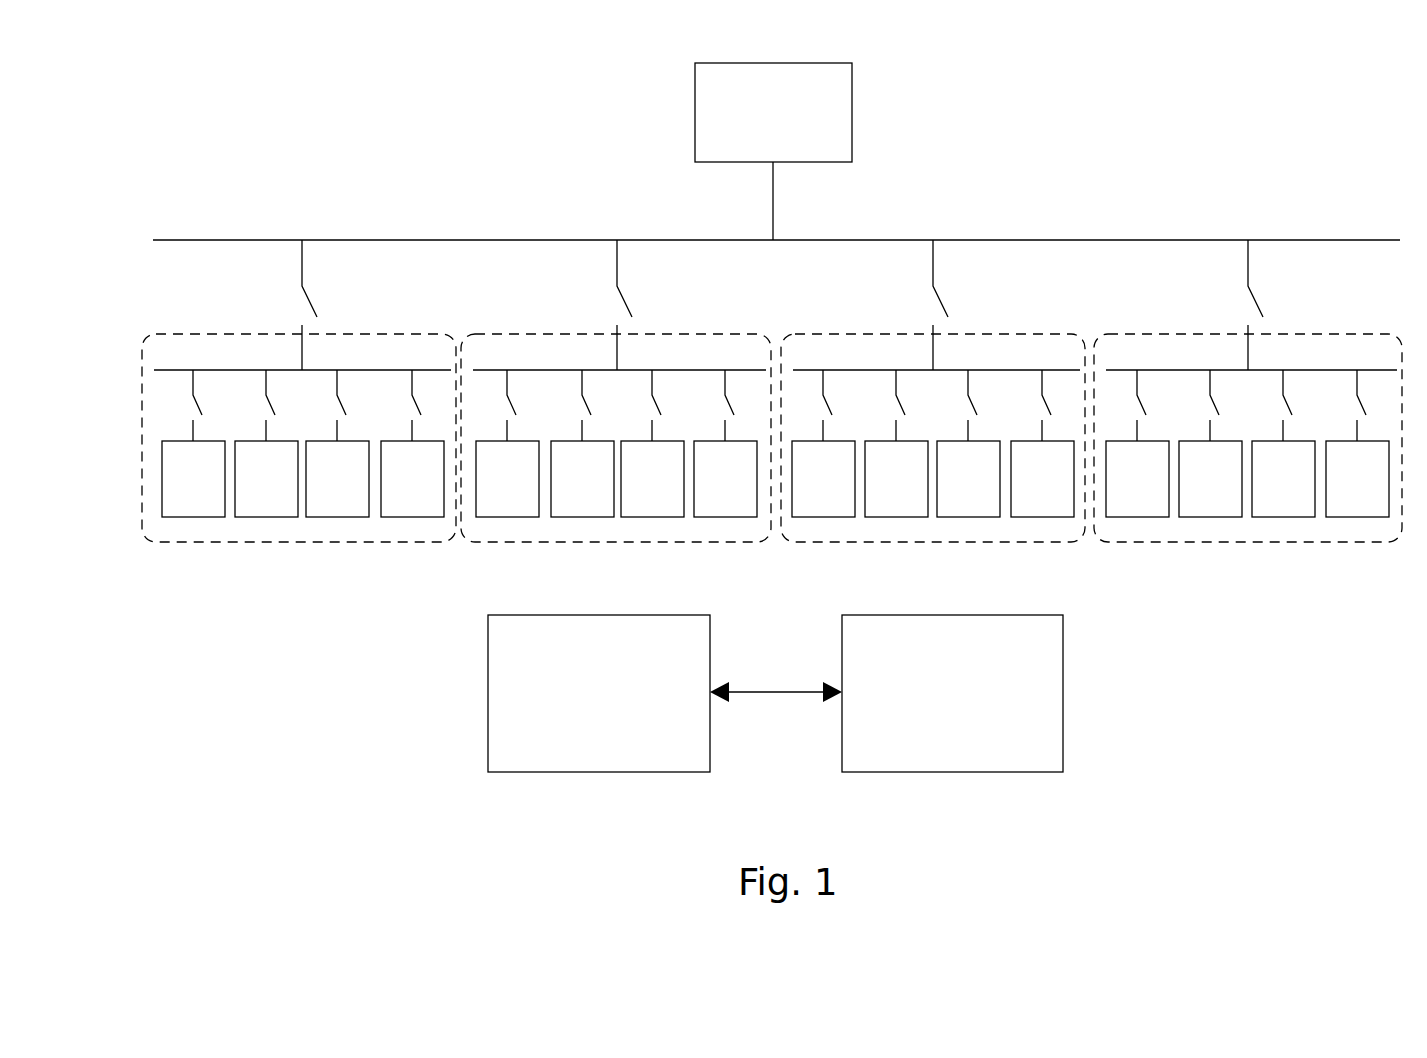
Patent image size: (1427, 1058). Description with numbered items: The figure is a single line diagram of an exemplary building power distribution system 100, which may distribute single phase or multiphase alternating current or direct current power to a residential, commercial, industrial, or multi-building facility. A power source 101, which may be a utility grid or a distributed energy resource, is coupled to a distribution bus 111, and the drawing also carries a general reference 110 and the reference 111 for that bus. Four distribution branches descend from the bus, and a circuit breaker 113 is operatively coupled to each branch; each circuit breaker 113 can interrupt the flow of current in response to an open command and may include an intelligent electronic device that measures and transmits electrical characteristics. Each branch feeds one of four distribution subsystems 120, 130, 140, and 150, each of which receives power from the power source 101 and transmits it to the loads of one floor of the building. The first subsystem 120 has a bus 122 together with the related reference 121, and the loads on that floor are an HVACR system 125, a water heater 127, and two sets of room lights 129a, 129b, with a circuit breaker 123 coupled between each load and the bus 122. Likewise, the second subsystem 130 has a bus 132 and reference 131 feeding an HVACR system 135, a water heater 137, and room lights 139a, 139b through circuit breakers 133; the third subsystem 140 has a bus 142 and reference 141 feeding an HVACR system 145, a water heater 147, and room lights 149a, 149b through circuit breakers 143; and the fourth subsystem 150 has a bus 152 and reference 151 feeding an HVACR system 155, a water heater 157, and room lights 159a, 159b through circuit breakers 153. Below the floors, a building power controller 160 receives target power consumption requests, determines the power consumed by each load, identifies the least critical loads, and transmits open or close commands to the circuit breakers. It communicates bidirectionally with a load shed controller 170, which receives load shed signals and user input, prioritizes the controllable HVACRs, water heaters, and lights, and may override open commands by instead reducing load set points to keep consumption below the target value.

The building power distribution system 100 is at (1242, 710).
The power source 101 is at (852, 80).
The power distribution system 110 is at (1050, 188).
The distribution bus 111 is at (1342, 240).
The circuit breakers 113 is at (312, 303).
The distribution subsystem 120 is at (230, 334).
The floor 1 power line 121 is at (400, 369).
The bus 122 is at (347, 369).
The circuit breaker 123 is at (275, 415).
The HVACR system 125 is at (193, 517).
The water heater 127 is at (266, 517).
The room lights 129a is at (337, 517).
The room lights 129b is at (412, 517).
The distribution subsystem 130 is at (549, 334).
The floor 2 power line 131 is at (715, 369).
The bus 132 is at (662, 369).
The circuit breaker 133 is at (591, 415).
The HVACR system 135 is at (507, 517).
The water heater 137 is at (582, 517).
The room lights 139a is at (652, 517).
The room lights 139b is at (725, 517).
The distribution subsystem 140 is at (869, 334).
The floor 3 power line 141 is at (1031, 369).
The bus 142 is at (978, 369).
The circuit breaker 143 is at (905, 415).
The HVACR system 145 is at (823, 517).
The water heater 147 is at (896, 517).
The room lights 149a is at (968, 517).
The room lights 149b is at (1042, 517).
The distribution subsystem 150 is at (1197, 334).
The floor 4 power line 151 is at (1346, 369).
The bus 152 is at (1293, 369).
The circuit breaker 153 is at (1219, 415).
The HVACR system 155 is at (1137, 517).
The water heater 157 is at (1210, 517).
The room lights 159a is at (1283, 517).
The room lights 159b is at (1357, 517).
The building power controller 160 is at (488, 635).
The load shed controller 170 is at (1063, 635).